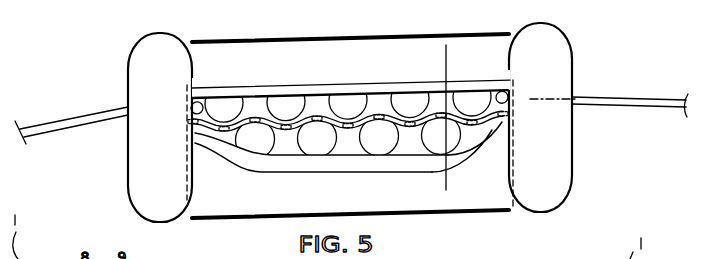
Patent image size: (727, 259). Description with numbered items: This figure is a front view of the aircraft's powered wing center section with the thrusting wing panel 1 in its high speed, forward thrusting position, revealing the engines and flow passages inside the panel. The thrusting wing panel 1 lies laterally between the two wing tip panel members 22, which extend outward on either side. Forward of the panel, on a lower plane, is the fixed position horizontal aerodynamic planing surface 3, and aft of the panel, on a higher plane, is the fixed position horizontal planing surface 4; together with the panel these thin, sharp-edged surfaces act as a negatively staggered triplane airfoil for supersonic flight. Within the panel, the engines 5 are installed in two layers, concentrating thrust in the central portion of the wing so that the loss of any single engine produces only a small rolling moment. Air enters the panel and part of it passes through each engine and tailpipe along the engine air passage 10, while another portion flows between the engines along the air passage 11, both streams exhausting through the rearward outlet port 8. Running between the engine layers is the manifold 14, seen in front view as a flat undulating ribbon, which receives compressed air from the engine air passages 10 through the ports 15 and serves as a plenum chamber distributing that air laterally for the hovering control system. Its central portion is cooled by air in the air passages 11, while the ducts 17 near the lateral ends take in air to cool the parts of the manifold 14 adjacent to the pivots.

The thrusting wing panel 1 is at (247, 157).
The fixed position horizontal aerodynamic planing surface 3 is at (212, 214).
The fixed position horizontal planing surface 4 is at (263, 39).
The engines 5 is at (252, 99).
The rearward outlet port 8 is at (425, 56).
The engine air passage 10 is at (454, 139).
The air passage 11 is at (319, 103).
The manifold 14 is at (283, 129).
The ports 15 is at (352, 133).
The ducts 17 is at (201, 103).
The wing tip panel members 22 is at (62, 119).